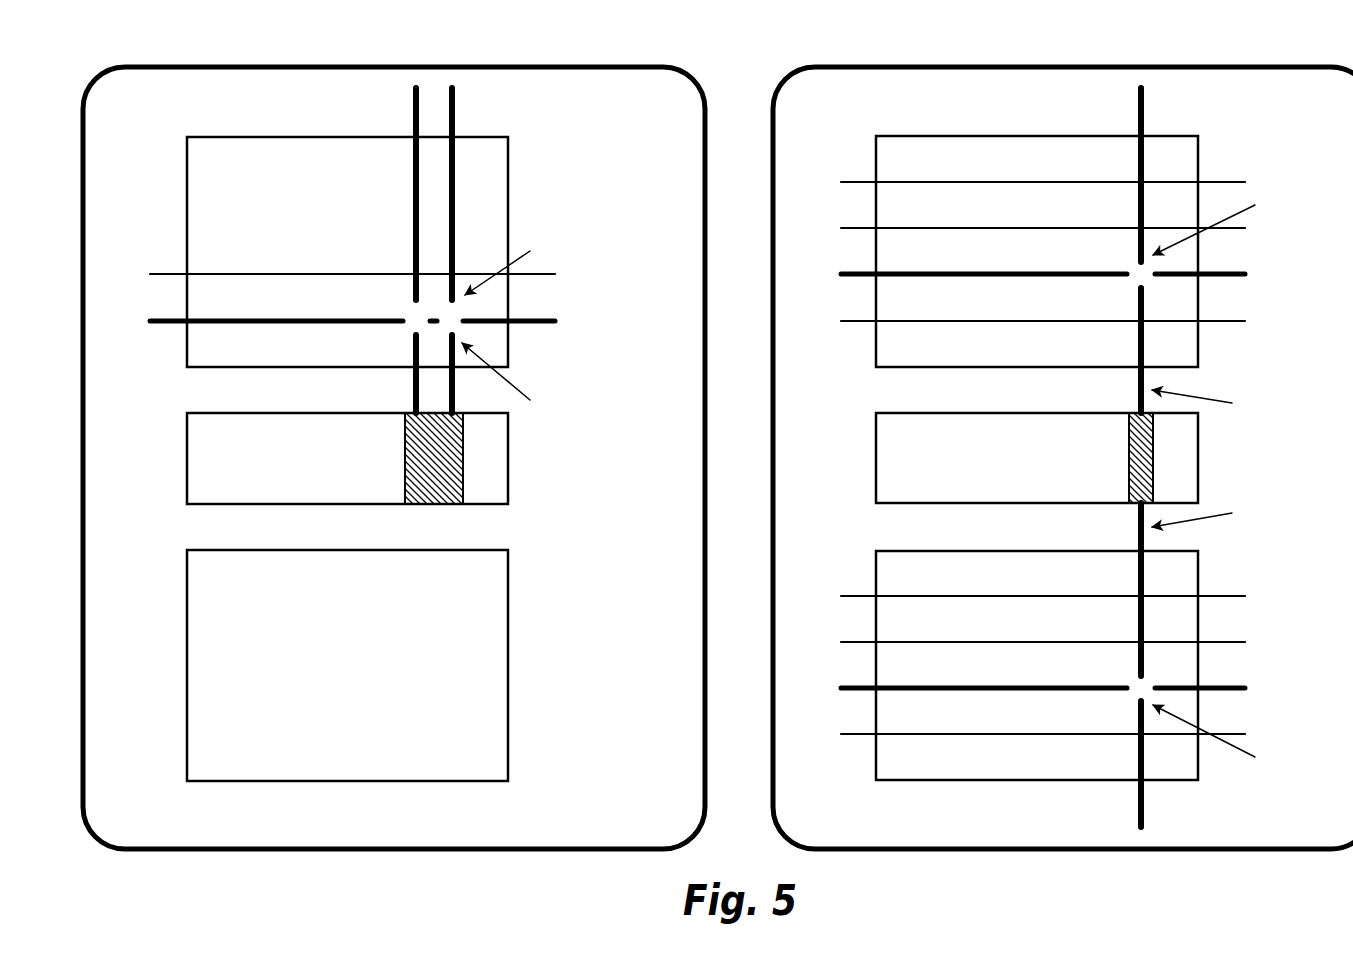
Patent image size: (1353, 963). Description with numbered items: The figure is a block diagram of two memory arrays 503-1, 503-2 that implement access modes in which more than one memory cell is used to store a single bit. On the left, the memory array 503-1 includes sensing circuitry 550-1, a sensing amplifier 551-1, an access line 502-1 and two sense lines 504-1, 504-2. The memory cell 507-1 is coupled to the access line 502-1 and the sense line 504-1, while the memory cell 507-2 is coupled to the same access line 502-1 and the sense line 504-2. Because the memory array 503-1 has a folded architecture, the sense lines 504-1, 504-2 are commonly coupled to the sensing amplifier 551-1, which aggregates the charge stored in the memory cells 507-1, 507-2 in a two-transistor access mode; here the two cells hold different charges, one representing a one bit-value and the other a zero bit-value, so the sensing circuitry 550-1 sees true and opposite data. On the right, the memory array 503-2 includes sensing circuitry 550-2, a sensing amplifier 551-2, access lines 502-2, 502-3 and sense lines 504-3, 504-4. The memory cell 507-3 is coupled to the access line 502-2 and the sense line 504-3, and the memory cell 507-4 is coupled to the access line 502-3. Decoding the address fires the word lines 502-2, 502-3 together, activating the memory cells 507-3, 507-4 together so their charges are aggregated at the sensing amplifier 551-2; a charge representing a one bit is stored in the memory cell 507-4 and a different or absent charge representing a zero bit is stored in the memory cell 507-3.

The memory array 503-1 is at (200, 38).
The memory array 503-2 is at (893, 38).
The sense line 504-1 is at (413, 112).
The sense line 504-2 is at (455, 112).
The sense line 504-3 is at (1138, 112).
The sense line 504-4 is at (1138, 806).
The access line 502-1 is at (171, 318).
The access line 502-2 is at (861, 271).
The access line 502-3 is at (861, 685).
The memory cell 507-1 is at (410, 331).
The memory cell 507-2 is at (460, 331).
The memory cell 507-3 is at (1132, 285).
The memory cell 507-4 is at (1132, 699).
The sensing circuitry 550-1 is at (187, 461).
The sensing circuitry 550-2 is at (876, 461).
The sensing amplifier 551-1 is at (405, 460).
The sensing amplifier 551-2 is at (1129, 460).